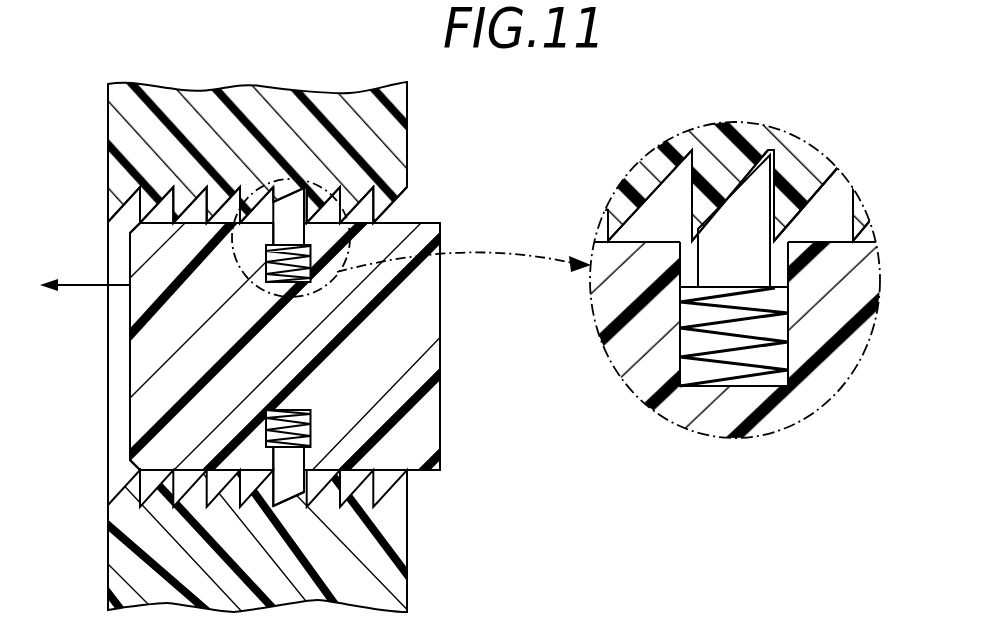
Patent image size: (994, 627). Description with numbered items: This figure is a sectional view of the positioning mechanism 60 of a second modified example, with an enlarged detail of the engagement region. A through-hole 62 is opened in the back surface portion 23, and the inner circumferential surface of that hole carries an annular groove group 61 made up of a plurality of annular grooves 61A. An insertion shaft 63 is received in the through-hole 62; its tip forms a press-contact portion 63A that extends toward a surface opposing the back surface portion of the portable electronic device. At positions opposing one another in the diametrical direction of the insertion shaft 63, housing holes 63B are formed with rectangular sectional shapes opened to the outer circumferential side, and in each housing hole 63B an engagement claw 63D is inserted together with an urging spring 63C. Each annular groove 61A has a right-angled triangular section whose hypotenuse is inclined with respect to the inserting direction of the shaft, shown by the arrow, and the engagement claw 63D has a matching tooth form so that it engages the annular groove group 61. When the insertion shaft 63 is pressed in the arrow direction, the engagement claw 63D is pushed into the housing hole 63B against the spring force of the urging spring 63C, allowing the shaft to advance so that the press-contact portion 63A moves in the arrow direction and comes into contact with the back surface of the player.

The annular groove group 61 is at (203, 190).
The annular groove 61A is at (384, 142).
The through-hole 62 is at (110, 230).
The insertion shaft 63 is at (423, 445).
The press-contact portion 63A is at (130, 458).
The housing hole 63B is at (772, 340).
The urging spring 63C is at (728, 358).
The engagement claw 63D is at (293, 210).
The back surface portion 23 is at (368, 570).
The positioning mechanism 60 is at (803, 168).